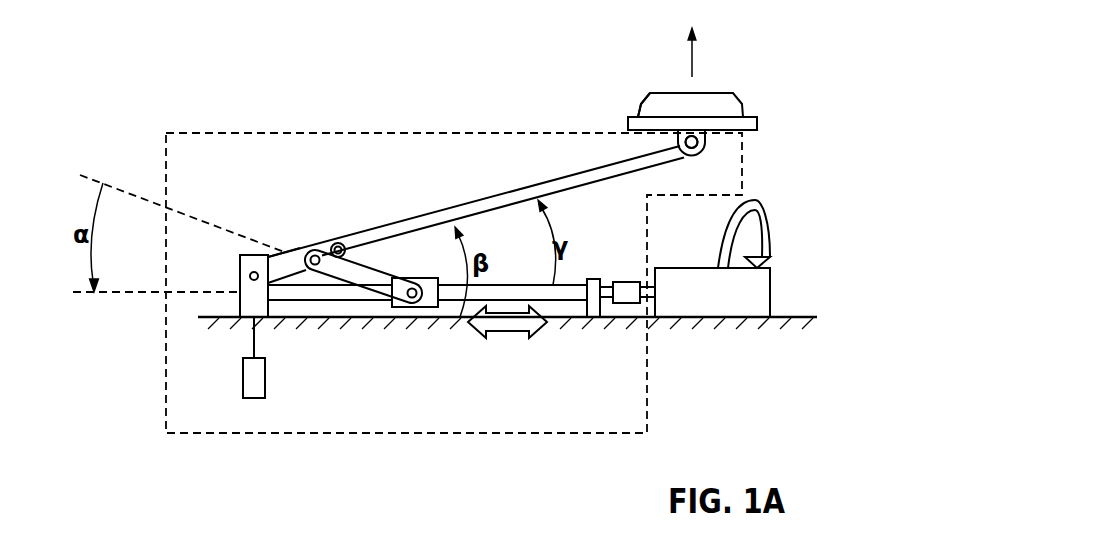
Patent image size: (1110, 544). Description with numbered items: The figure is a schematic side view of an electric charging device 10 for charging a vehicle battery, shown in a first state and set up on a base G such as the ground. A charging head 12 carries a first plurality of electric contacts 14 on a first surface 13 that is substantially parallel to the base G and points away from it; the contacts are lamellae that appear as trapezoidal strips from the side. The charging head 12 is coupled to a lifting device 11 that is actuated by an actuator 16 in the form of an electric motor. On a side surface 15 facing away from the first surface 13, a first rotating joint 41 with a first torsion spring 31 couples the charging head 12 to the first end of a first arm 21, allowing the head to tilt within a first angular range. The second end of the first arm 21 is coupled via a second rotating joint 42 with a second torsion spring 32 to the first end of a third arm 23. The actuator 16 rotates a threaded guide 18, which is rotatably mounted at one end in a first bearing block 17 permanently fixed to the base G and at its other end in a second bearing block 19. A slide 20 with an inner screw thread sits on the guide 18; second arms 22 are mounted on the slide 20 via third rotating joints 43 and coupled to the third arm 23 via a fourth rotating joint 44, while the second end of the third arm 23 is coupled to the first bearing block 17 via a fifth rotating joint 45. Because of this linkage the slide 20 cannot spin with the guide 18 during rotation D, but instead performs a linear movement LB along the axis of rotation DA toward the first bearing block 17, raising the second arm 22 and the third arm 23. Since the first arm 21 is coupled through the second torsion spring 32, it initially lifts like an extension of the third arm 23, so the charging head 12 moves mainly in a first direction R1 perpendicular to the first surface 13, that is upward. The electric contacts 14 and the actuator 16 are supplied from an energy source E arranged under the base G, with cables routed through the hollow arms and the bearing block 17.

The electric charging device 10 is at (250, 100).
The lifting device 11 is at (650, 433).
The charging head 12 is at (752, 123).
The first surface 13 is at (637, 112).
The electric contacts 14 is at (730, 98).
The side surface 15 is at (628, 140).
The actuator 16 is at (760, 292).
The first bearing block 17 is at (246, 303).
The guide 18 is at (303, 300).
The second bearing block 19 is at (593, 318).
The slide 20 is at (432, 308).
The first arm 21 is at (478, 208).
The second arm 22 is at (373, 285).
The third arm 23 is at (283, 263).
The first torsion spring 31 is at (695, 158).
The second torsion spring 32 is at (365, 201).
The first rotating joint 41 is at (703, 143).
The second rotating joint 42 is at (338, 243).
The third rotating joint 43 is at (412, 302).
The fourth rotating joint 44 is at (315, 253).
The fifth rotating joint 45 is at (249, 275).
The rotation D is at (755, 215).
The energy source E is at (243, 387).
The base G is at (803, 318).
The linear movement LB is at (508, 338).
The axis of rotation DA is at (105, 293).
The first direction R1 is at (693, 57).